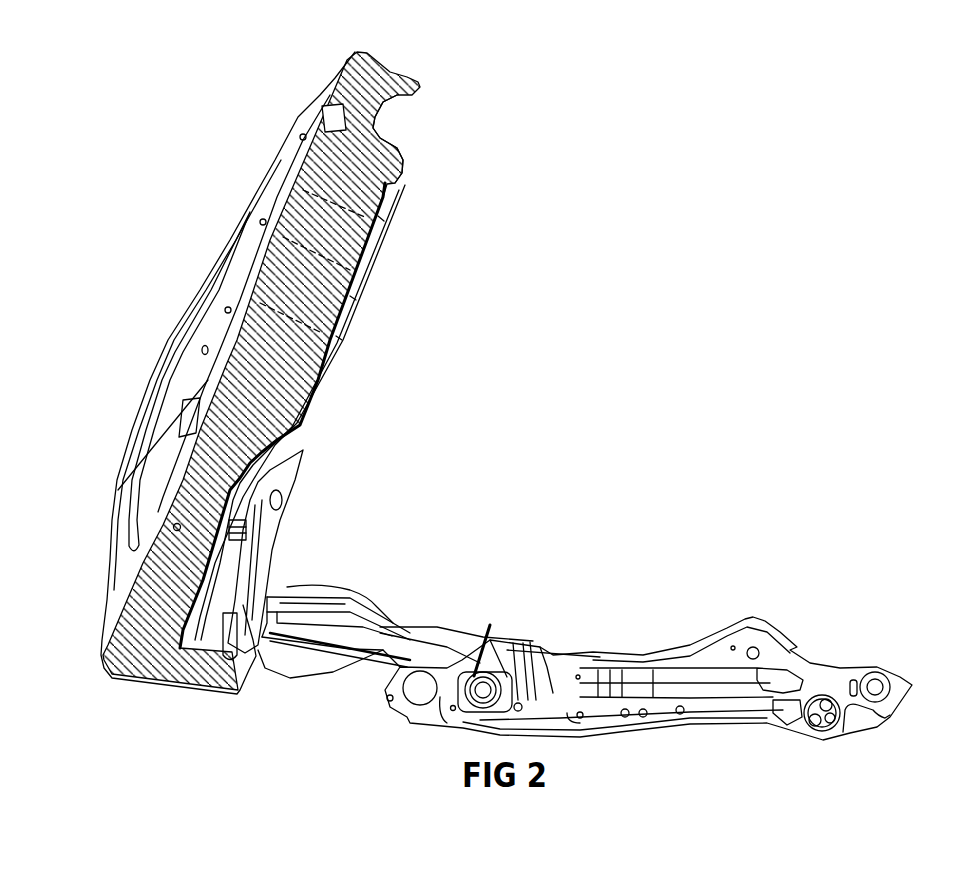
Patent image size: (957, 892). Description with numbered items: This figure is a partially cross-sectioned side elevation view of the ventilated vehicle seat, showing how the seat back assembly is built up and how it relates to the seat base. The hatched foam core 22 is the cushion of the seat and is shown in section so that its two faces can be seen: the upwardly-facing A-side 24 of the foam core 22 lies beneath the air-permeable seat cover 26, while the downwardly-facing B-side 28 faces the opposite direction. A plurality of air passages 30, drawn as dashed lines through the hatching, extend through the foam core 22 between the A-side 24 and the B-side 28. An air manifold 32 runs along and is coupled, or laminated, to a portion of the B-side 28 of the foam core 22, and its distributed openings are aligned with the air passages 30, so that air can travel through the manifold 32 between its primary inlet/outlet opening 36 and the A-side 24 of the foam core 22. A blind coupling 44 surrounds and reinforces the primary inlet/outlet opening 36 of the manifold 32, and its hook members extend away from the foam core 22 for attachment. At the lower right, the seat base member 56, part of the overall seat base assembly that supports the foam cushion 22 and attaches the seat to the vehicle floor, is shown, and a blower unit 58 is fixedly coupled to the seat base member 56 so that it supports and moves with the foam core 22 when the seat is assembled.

The foam core 22 is at (162, 665).
The A-side 24 is at (322, 136).
The seat cover 26 is at (278, 177).
The B-side 28 is at (403, 173).
The air passages 30 is at (352, 272).
The air manifold 32 is at (340, 373).
The primary inlet/outlet opening 36 is at (238, 603).
The blind coupling 44 is at (246, 530).
The seat base member 56 is at (493, 616).
The blower unit 58 is at (380, 607).